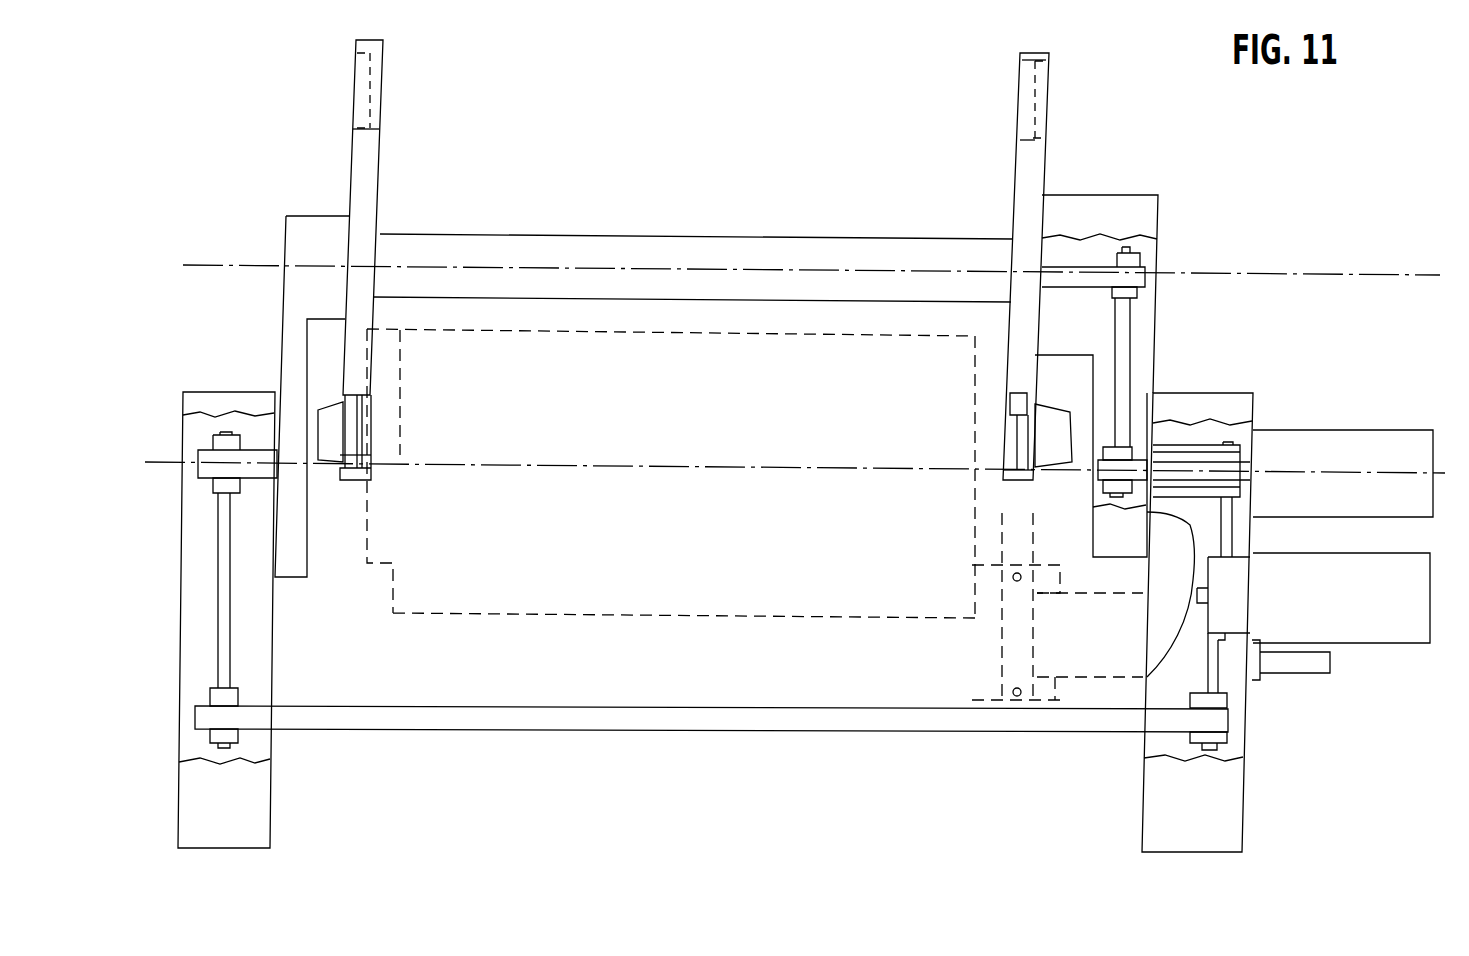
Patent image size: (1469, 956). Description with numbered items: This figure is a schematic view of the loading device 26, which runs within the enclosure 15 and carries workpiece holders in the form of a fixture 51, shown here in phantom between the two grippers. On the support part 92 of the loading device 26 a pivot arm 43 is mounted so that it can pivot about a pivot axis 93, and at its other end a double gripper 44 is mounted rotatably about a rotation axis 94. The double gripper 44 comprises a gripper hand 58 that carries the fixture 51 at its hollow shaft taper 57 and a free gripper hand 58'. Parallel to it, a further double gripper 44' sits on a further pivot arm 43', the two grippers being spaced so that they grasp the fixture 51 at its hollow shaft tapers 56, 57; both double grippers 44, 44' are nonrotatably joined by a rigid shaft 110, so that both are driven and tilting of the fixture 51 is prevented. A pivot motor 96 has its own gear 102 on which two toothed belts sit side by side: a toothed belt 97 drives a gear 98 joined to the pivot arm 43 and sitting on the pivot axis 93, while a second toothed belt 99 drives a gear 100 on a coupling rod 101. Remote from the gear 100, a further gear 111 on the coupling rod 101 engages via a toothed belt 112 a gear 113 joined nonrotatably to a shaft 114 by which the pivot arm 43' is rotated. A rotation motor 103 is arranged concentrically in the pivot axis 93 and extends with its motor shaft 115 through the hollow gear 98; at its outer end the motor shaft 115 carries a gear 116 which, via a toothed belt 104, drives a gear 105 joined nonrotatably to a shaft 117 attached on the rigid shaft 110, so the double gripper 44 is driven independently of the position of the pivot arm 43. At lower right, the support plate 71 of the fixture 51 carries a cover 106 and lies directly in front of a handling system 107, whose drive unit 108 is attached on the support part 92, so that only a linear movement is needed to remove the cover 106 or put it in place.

The loading device 26 is at (1104, 148).
The rotation axis 94 is at (237, 262).
The rigid shaft 110 is at (686, 237).
The fixture 51 is at (588, 330).
The pivot axis 93 is at (173, 460).
The further pivot arm 43' is at (312, 358).
The further double gripper 44' is at (384, 260).
The hollow shaft taper 56 is at (322, 412).
The gripper hand 58 is at (697, 468).
The shaft 114 is at (198, 472).
The gear 113 is at (213, 492).
The toothed belt 112 is at (225, 620).
The further gear 111 is at (228, 735).
The coupling rod 101 is at (672, 722).
The double gripper 44 is at (1001, 266).
The free gripper hand 58' is at (1067, 85).
The enclosure 15 is at (1008, 400).
The hollow shaft taper 57 is at (1000, 448).
The pivot arm 43 is at (1104, 357).
The gear 105 is at (1140, 258).
The shaft 117 is at (1146, 276).
The toothed belt 104 is at (1133, 349).
The motor shaft 115 is at (1094, 473).
The gear 116 is at (1104, 485).
The support part 92 is at (1218, 798).
The gear 98 is at (1190, 445).
The rotation motor 103 is at (1322, 441).
The pivot motor 96 is at (1385, 625).
The toothed belt 97 is at (1250, 530).
The gear 102 is at (1232, 577).
The second toothed belt 99 is at (1220, 663).
The gear 100 is at (1228, 712).
The drive unit 108 is at (1332, 663).
The cover 106 is at (1046, 700).
The support plate 71 is at (982, 673).
The handling system 107 is at (1126, 663).